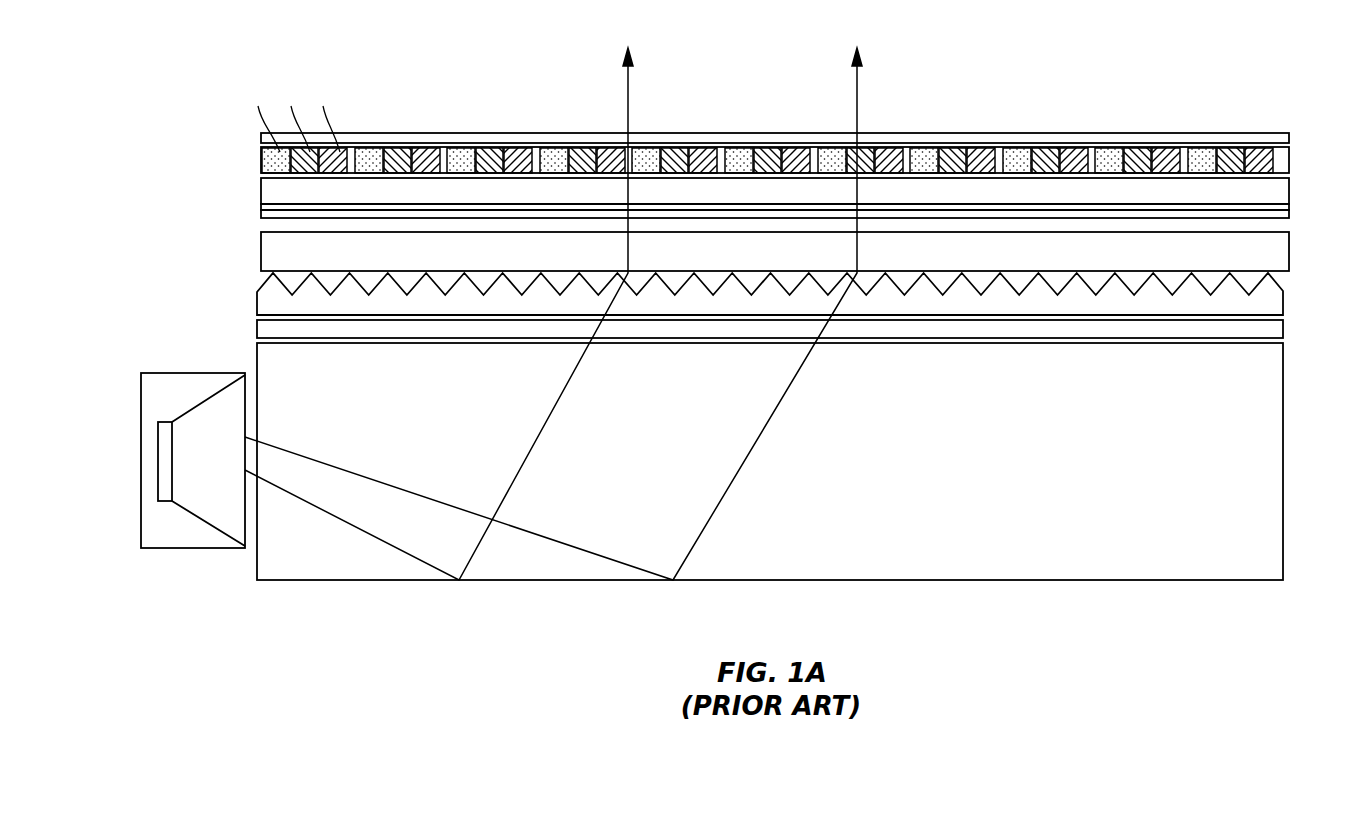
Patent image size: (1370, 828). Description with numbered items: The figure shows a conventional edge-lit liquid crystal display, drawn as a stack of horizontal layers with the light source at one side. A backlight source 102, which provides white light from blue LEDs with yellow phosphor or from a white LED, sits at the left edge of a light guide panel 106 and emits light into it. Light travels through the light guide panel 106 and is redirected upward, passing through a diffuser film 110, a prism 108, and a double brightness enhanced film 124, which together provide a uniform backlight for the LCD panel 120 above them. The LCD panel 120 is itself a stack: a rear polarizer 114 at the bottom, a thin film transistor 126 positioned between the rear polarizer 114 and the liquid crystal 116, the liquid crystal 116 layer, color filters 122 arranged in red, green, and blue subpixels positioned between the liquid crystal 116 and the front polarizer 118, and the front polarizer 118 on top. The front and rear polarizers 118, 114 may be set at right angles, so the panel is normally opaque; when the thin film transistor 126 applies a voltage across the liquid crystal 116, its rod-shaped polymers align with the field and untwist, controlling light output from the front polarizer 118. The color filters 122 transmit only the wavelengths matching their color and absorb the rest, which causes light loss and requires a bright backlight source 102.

The backlight source 102 is at (190, 373).
The light guide panel 106 is at (1283, 420).
The prism 108 is at (1283, 297).
The diffuser film 110 is at (1283, 328).
The rear polarizer 114 is at (1289, 213).
The liquid crystal 116 is at (1289, 176).
The front polarizer 118 is at (1289, 136).
The LCD panel 120 is at (250, 133).
The color filters 122 is at (1289, 154).
The double brightness enhanced film 124 is at (1289, 250).
The thin film transistor 126 is at (1289, 192).